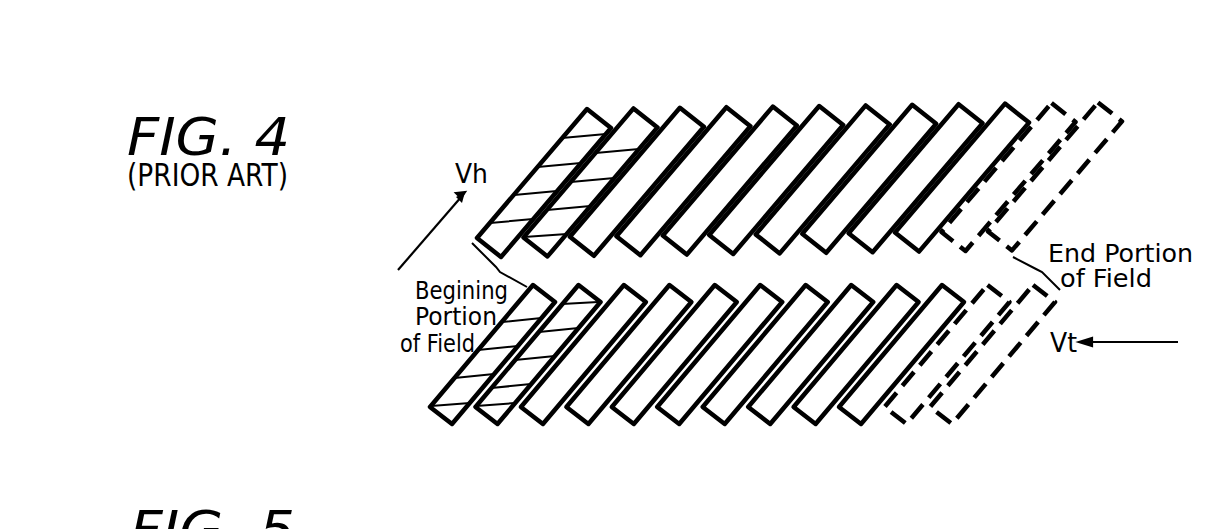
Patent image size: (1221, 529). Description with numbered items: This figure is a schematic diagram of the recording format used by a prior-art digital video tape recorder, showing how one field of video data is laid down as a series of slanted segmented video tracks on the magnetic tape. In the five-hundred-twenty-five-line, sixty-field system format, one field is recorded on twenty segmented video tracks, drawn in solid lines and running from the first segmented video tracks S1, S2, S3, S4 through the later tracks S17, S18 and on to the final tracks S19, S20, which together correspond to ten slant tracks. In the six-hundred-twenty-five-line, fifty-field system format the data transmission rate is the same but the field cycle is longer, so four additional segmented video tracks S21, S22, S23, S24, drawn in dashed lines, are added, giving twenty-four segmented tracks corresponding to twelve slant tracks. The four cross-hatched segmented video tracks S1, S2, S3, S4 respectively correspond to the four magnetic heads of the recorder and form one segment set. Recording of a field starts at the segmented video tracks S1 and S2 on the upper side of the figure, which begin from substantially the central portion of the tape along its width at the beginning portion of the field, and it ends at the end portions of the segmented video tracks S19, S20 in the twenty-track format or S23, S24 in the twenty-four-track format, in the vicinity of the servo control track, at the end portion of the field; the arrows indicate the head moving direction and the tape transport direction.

The segmented video track S1 is at (598, 116).
The segmented video track S2 is at (645, 116).
The segmented video track S3 is at (443, 418).
The segmented video track S4 is at (492, 419).
The segmented video track S17 is at (972, 113).
The segmented video track S18 is at (1018, 114).
The segmented video track S19 is at (807, 410).
The segmented video track S20 is at (855, 412).
The segmented video track S21 is at (1068, 113).
The segmented video track S22 is at (1113, 113).
The segmented video track S23 is at (908, 413).
The segmented video track S24 is at (960, 407).